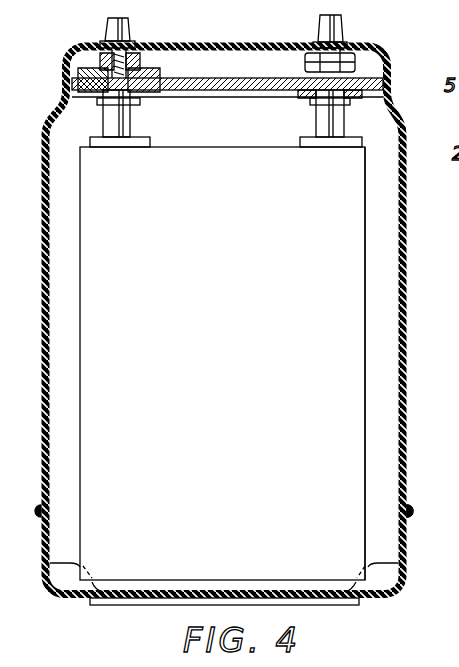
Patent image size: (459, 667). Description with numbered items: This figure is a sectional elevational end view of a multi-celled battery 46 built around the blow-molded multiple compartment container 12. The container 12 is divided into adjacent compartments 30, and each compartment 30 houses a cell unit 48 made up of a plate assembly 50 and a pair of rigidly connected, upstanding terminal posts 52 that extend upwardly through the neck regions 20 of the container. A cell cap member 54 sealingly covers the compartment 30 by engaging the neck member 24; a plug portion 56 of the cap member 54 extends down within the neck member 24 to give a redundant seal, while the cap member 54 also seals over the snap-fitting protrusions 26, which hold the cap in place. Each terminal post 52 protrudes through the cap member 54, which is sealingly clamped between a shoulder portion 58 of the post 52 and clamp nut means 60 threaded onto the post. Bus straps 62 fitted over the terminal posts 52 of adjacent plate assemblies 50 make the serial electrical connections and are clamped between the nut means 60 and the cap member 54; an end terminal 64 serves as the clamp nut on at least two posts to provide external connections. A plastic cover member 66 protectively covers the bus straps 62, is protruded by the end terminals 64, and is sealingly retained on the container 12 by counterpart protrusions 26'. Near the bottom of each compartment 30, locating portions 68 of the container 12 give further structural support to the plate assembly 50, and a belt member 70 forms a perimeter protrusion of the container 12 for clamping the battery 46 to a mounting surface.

The multiple compartment container 12 is at (402, 566).
The neck region 20 is at (232, 126).
The neck member 24 is at (389, 52).
The snap-fitting protrusion 26 is at (405, 81).
The snap-fitting protrusion counterpart 26' is at (415, 120).
The compartment 30 is at (392, 359).
The multi-celled battery 46 is at (397, 606).
The cell unit 48 is at (431, 398).
The plate assembly 50 is at (240, 379).
The terminal post 52 is at (132, 132).
The cell cap member 54 is at (208, 78).
The plug portion 56 is at (338, 104).
The shoulder portion 58 is at (140, 102).
The clamp nut means 60 is at (132, 58).
The bus strap 62 is at (142, 76).
The end terminal 64 is at (105, 28).
The cover member 66 is at (244, 45).
The locating portion 68 is at (72, 563).
The belt member 70 is at (405, 512).